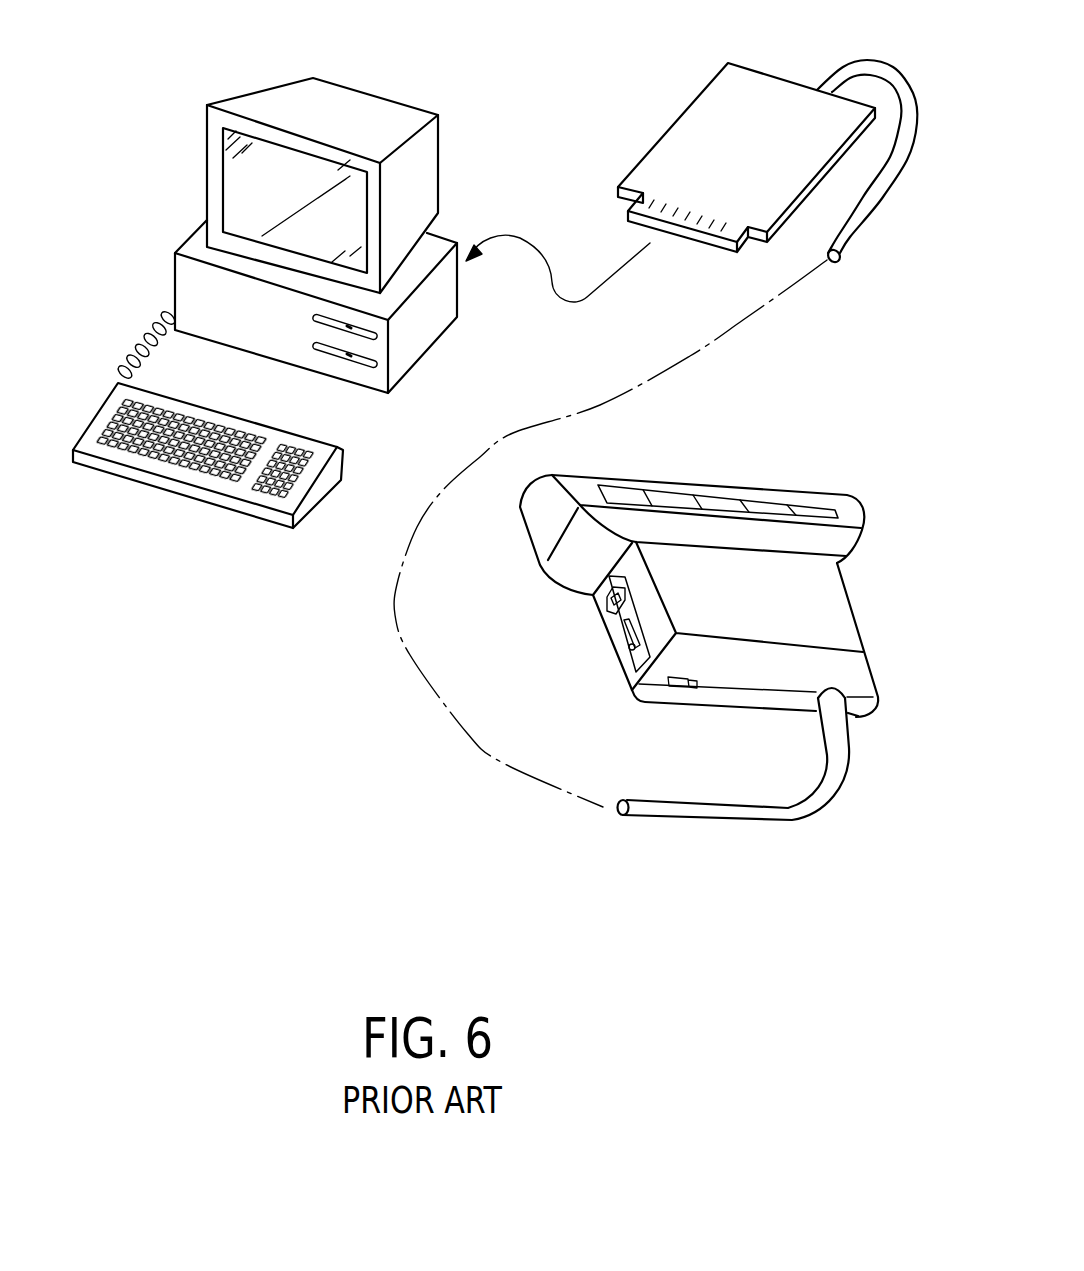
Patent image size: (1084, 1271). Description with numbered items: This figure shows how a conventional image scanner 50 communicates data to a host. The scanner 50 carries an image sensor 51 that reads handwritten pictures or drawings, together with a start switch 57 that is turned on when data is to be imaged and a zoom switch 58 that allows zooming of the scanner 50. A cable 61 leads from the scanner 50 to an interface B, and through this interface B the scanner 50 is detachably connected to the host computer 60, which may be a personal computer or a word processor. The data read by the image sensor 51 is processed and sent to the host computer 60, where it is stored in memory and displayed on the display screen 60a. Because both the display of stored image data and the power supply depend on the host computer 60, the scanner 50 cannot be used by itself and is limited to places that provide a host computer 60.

The host computer 60 is at (270, 290).
The display screen 60a is at (242, 193).
The interface B is at (698, 117).
The image scanner 50 is at (731, 588).
The image sensor 51 is at (770, 505).
The start switch 57 is at (607, 603).
The zoom switch 58 is at (631, 648).
The cable 61 is at (728, 822).